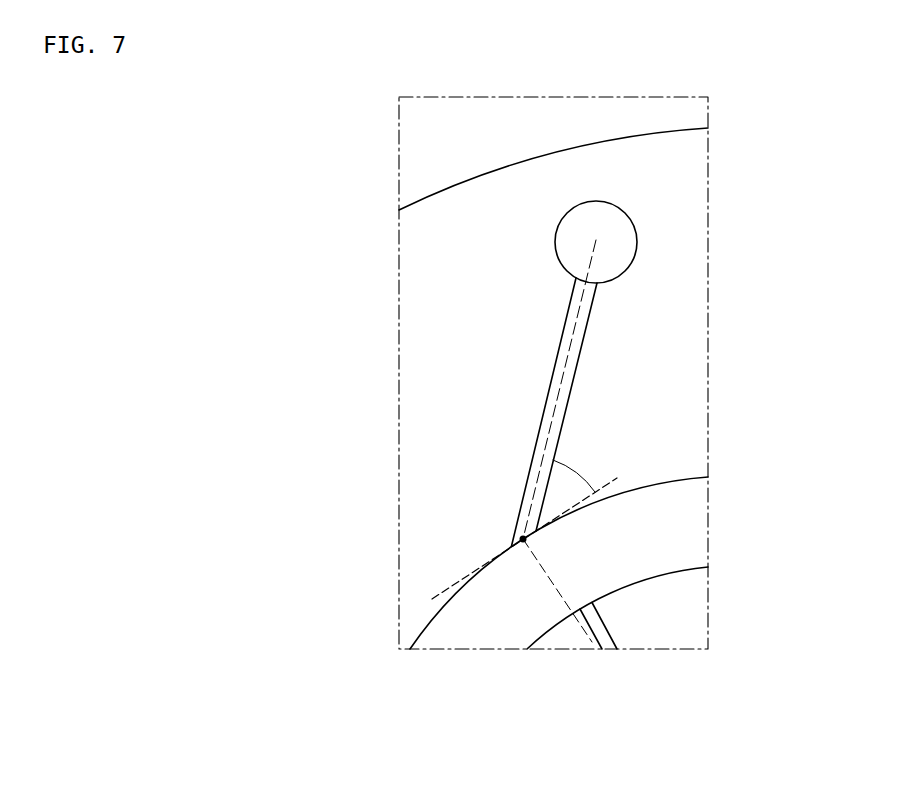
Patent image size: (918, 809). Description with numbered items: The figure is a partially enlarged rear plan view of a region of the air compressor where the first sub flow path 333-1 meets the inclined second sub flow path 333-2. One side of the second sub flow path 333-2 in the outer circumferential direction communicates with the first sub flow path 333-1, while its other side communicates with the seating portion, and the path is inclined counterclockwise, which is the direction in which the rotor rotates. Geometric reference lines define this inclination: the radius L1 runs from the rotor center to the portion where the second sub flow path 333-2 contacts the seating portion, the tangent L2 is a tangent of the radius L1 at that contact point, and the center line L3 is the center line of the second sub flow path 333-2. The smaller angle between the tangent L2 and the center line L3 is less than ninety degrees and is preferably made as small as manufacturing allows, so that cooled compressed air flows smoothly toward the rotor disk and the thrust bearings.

The 2-1-th flow path 333-1 is at (554, 238).
The 2-2-th flow path 333-2 is at (557, 347).
The radius L1 is at (555, 585).
The tangent of L1 L2 is at (593, 493).
The center line of the 2-2-th flow path L3 is at (547, 443).